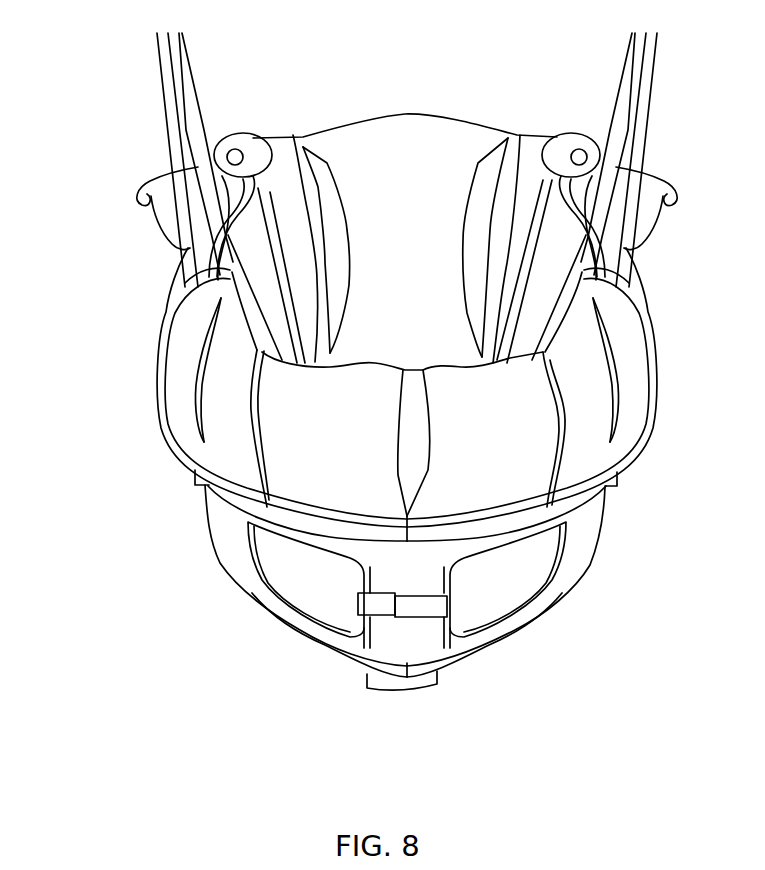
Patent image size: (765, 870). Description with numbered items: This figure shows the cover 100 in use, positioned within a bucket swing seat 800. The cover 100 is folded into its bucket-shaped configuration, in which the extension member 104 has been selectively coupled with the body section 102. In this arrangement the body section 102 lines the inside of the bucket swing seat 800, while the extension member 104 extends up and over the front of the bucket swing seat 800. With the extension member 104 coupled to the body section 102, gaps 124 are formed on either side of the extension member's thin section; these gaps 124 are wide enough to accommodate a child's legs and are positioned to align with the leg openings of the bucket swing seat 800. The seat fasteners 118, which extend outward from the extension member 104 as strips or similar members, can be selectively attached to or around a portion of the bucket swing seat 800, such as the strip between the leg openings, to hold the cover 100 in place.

The cover 100 is at (122, 312).
The body section 102 is at (433, 200).
The extension member 104 is at (337, 457).
The seat fastener 118 is at (418, 605).
The gap 124 is at (307, 585).
The bucket swing seat 800 is at (575, 540).